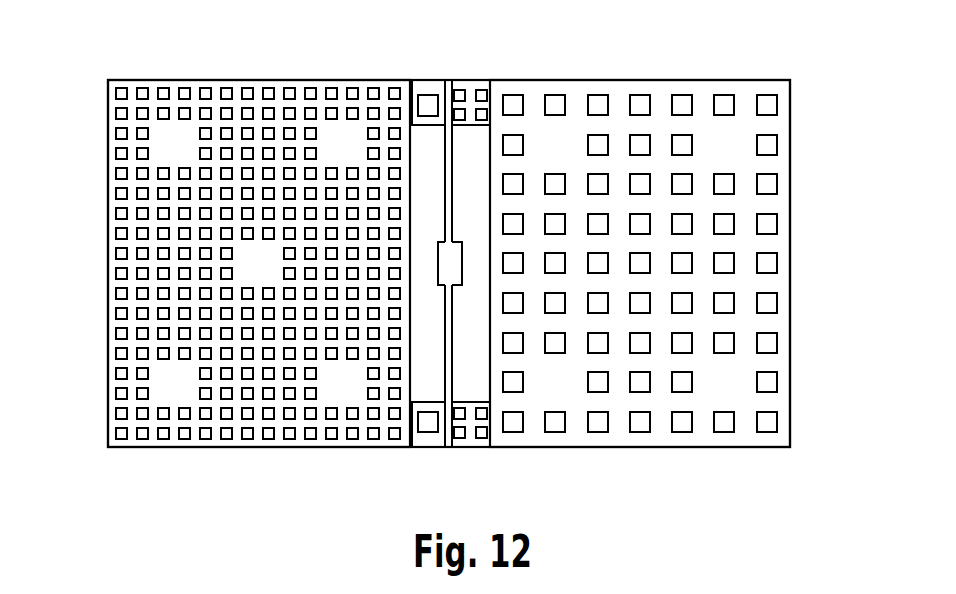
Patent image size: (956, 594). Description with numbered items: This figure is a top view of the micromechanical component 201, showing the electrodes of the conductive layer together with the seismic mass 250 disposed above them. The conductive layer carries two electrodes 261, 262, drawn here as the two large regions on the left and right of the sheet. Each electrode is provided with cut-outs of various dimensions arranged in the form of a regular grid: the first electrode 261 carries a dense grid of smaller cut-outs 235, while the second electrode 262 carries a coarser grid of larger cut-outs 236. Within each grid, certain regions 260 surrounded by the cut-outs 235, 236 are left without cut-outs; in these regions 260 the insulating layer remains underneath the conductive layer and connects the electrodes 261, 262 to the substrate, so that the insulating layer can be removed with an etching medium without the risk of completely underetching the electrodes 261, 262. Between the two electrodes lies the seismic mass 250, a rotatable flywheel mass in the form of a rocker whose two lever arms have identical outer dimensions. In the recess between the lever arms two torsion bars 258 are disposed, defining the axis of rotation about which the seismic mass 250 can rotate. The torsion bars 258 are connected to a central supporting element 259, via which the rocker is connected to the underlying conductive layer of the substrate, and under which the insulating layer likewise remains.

The micromechanical component 201 is at (160, 56).
The first electrode 261 is at (217, 95).
The cut-outs 235 is at (290, 95).
The regions without cut-outs 260 is at (724, 144).
The second electrode 262 is at (617, 100).
The cut-outs 236 is at (725, 102).
The seismic mass 250 is at (435, 437).
The torsion bars 258 is at (450, 147).
The supporting element 259 is at (452, 263).